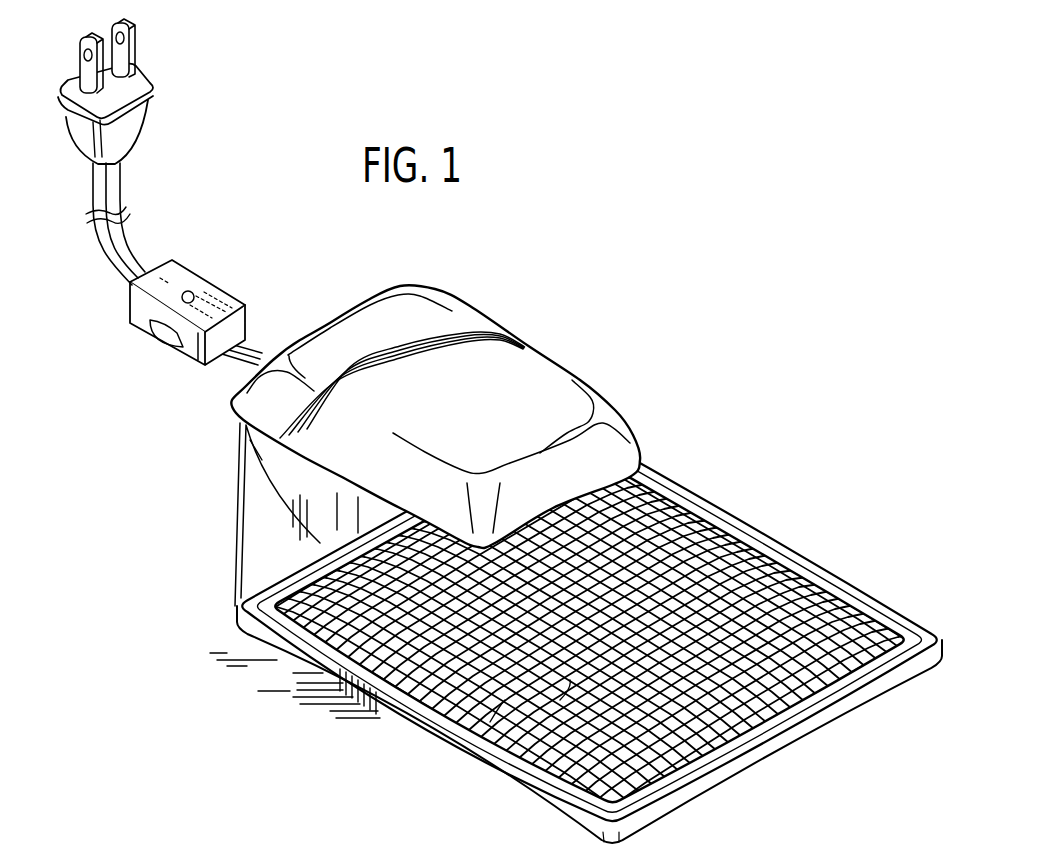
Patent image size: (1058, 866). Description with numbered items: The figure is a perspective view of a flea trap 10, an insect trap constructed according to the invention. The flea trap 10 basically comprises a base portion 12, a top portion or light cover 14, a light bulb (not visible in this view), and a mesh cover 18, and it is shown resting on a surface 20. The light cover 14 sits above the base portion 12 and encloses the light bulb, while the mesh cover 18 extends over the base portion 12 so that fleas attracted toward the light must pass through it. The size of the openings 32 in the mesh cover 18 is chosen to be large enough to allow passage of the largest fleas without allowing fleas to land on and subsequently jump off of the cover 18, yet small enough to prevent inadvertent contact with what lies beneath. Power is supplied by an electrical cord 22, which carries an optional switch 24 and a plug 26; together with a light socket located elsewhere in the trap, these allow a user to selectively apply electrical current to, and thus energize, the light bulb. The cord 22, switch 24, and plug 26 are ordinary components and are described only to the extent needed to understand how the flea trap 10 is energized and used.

The flea trap 10 is at (509, 435).
The base portion 12 is at (585, 638).
The light cover 14 is at (530, 348).
The mesh cover 18 is at (440, 722).
The surface 20 is at (295, 685).
The electrical cord 22 is at (113, 232).
The switch 24 is at (193, 278).
The plug 26 is at (128, 127).
The openings 32 is at (560, 700).